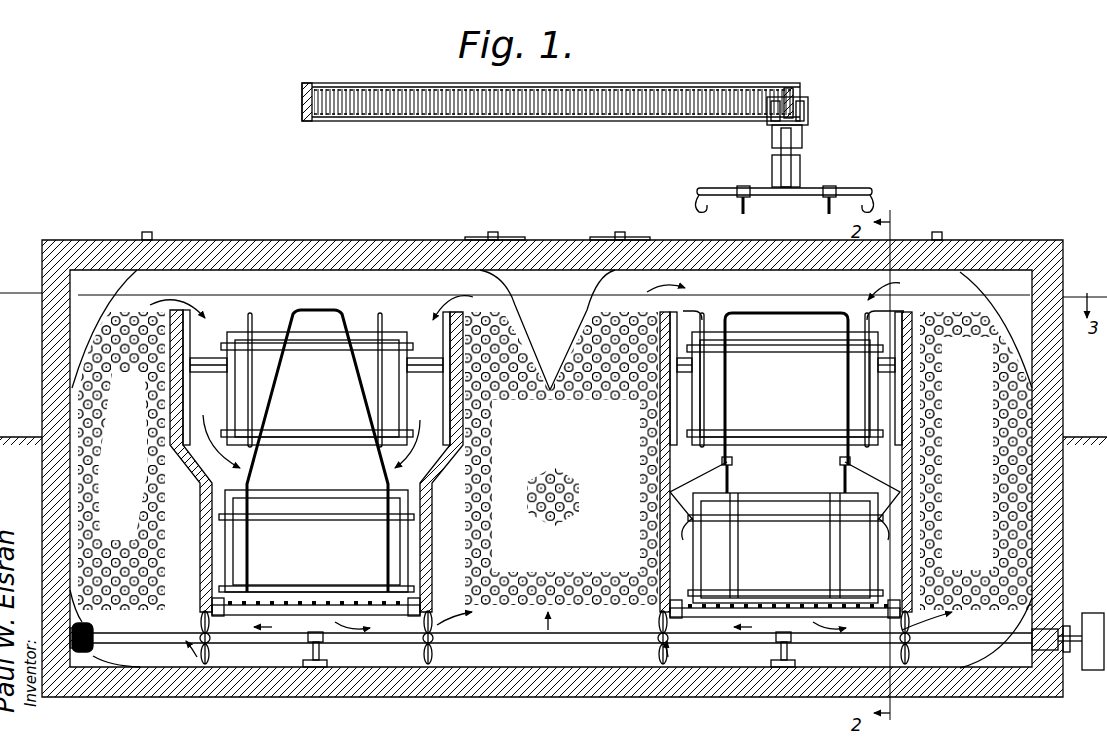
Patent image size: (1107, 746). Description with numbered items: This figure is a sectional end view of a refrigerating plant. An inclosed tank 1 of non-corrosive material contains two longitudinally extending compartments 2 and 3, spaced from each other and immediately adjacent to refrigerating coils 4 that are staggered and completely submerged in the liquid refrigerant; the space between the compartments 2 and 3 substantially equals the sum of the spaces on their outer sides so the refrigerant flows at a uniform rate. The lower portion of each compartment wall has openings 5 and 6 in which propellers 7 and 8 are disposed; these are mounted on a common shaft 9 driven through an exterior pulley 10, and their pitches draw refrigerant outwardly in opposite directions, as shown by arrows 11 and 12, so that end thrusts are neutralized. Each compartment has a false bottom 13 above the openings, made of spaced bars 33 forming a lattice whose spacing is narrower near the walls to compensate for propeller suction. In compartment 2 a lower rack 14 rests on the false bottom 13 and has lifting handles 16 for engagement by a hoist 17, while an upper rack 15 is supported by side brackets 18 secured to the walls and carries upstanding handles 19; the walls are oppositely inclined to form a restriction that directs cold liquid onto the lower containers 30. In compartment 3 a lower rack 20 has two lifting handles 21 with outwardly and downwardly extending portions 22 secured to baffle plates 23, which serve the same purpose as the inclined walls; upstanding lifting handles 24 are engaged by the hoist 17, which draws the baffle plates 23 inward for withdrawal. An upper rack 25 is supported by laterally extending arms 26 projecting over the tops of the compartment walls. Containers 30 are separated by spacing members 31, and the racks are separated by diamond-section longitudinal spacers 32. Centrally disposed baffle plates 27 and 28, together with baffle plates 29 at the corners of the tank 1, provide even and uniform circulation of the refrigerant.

The tank 1 is at (1063, 405).
The compartment 2 is at (316, 461).
The compartment 3 is at (786, 462).
The refrigerating coils 4 is at (110, 345).
The openings 5 is at (210, 628).
The openings 6 is at (694, 624).
The propeller 7 is at (200, 622).
The propeller 8 is at (423, 626).
The common shaft 9 is at (796, 648).
The exterior pulley 10 is at (1093, 613).
The arrow 11 is at (479, 636).
The arrow 12 is at (591, 623).
The false bottom 13 is at (556, 615).
The lower rack 14 is at (272, 508).
The upper rack 15 is at (305, 346).
The lifting handles 16 is at (318, 312).
The hoist 17 is at (806, 172).
The side brackets 18 is at (212, 393).
The upstanding handles 19 is at (253, 320).
The lower rack 20 is at (790, 520).
The lifting handles 21 is at (732, 468).
The extensions 22 is at (682, 488).
The baffle plates 23 is at (781, 538).
The lifting handles 24 is at (785, 312).
The upper rack 25 is at (786, 352).
The laterally extending arms 26 is at (700, 313).
The baffle plate 27 is at (547, 330).
The baffle plate 28 is at (568, 662).
The baffle plates 29 is at (1002, 661).
The containers 30 is at (551, 469).
The spacing members 31 is at (272, 382).
The longitudinal spacers 32 is at (421, 364).
The bars 33 is at (320, 603).